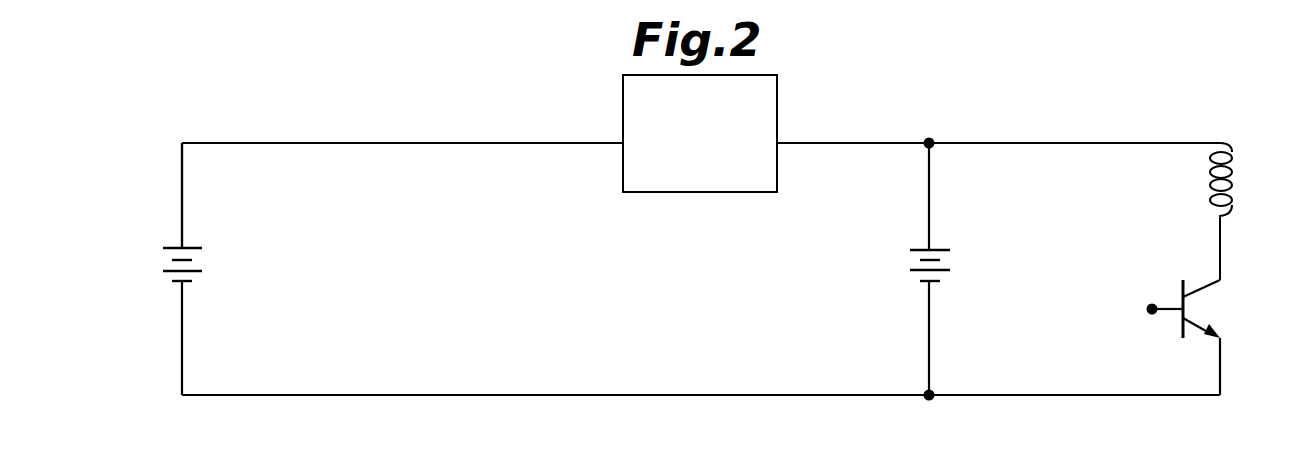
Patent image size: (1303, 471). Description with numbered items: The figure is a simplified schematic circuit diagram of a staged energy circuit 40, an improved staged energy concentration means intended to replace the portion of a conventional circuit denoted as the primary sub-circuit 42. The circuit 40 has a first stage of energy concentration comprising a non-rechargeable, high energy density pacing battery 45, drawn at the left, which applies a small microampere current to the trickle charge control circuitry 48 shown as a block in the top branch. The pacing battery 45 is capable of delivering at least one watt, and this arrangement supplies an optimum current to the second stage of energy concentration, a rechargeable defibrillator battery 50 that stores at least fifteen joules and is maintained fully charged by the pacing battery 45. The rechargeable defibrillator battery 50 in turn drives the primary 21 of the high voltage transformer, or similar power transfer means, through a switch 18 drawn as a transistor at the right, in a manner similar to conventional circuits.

The primary sub-circuit 42 is at (701, 74).
The trickle charge control circuitry 48 is at (778, 108).
The staged energy circuit 40 is at (182, 182).
The pacing battery 45 is at (170, 271).
The rechargeable defibrillator battery 50 is at (937, 249).
The primary of the high voltage transformer 21 is at (1235, 163).
The switch 18 is at (1181, 324).